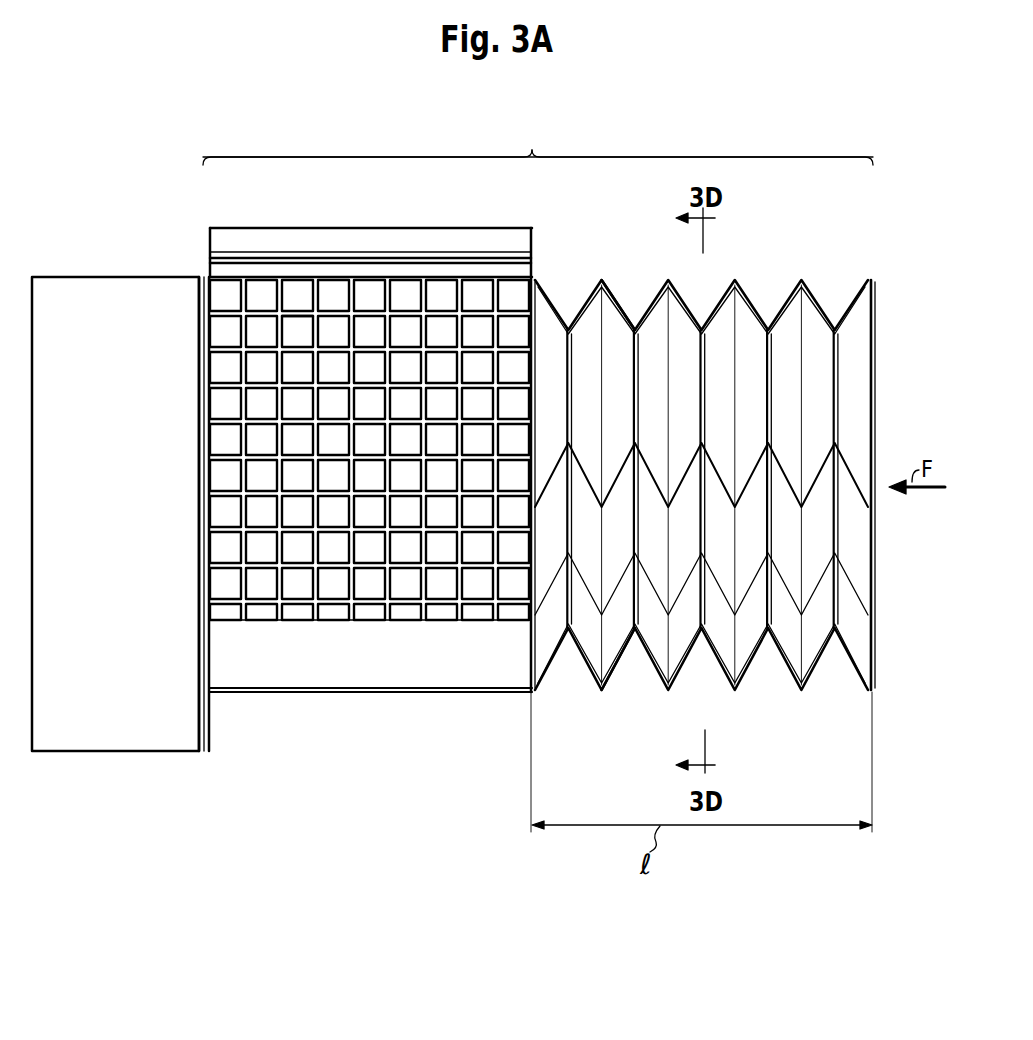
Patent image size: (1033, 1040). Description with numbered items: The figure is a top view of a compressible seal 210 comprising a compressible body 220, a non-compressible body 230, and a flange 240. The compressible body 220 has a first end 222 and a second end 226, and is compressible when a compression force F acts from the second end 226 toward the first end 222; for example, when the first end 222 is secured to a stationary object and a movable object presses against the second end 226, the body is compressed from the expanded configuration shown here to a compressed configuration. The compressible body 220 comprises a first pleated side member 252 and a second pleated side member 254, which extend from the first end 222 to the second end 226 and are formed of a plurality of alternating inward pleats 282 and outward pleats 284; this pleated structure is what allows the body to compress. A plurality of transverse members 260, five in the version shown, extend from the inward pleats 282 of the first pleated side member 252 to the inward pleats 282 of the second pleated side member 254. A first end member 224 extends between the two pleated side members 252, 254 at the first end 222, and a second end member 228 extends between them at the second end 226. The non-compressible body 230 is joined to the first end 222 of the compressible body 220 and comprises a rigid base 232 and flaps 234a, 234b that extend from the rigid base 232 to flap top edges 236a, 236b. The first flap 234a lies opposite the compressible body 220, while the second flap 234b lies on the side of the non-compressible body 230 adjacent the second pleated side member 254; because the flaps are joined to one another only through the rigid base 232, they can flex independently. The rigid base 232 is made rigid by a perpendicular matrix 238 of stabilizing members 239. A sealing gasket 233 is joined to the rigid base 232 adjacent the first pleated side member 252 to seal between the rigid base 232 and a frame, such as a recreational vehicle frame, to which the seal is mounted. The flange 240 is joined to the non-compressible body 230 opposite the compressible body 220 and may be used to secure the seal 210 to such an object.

The compressible seal 210 is at (630, 139).
The compressible body 220 is at (703, 157).
The first end 222 is at (513, 711).
The first end member 224 is at (530, 641).
The second end 226 is at (877, 696).
The second end member 228 is at (878, 420).
The non-compressible body 230 is at (367, 157).
The rigid base 232 is at (380, 278).
The sealing gasket 233 is at (492, 228).
The first flap 234a is at (200, 337).
The second flap 234b is at (290, 700).
The flap top edge 236a is at (203, 300).
The flap top edge 236b is at (370, 718).
The perpendicular matrix 238 is at (386, 434).
The stabilizing members 239 is at (303, 330).
The flange 240 is at (95, 280).
The first pleated side member 252 is at (643, 300).
The second pleated side member 254 is at (620, 670).
The transverse members 260 is at (573, 378).
The inward pleats 282 is at (650, 300).
The outward pleats 284 is at (600, 278).